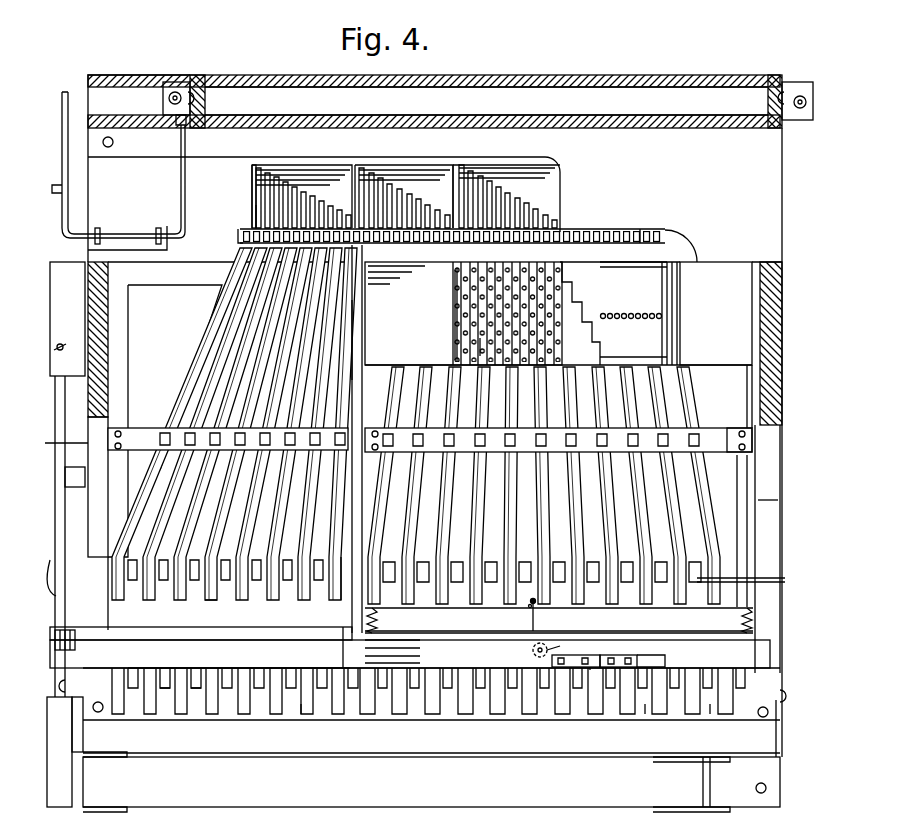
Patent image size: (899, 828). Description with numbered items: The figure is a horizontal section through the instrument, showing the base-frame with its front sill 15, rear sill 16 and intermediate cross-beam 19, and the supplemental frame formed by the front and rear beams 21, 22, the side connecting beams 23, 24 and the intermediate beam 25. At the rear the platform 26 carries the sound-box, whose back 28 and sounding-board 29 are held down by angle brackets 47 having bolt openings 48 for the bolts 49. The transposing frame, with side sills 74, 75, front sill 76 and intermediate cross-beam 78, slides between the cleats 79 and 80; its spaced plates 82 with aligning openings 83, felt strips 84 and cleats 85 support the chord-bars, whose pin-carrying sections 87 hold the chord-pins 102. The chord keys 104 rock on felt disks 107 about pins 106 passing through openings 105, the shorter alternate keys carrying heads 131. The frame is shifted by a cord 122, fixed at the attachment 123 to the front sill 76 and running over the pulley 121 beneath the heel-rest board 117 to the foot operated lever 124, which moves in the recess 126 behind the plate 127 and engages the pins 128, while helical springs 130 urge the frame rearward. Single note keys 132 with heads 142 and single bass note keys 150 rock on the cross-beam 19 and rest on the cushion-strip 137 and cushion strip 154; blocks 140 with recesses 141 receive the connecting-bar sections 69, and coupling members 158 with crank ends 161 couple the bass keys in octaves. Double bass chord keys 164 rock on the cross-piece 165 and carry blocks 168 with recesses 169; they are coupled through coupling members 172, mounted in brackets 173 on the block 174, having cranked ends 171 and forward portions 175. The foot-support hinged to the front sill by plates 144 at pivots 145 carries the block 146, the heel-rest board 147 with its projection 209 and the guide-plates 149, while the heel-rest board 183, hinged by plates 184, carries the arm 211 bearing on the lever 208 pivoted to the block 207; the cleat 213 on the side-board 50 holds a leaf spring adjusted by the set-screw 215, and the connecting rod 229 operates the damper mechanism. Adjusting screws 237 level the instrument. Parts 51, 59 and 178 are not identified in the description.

The back 28 is at (483, 75).
The sounding-board 29 is at (522, 95).
The angle bracket 47 is at (200, 78).
The bolt openings 48 is at (162, 82).
The bolts 49 is at (177, 92).
The platform 26 is at (139, 168).
The rear sill 16 is at (545, 165).
The connecting rod 229 is at (179, 128).
The adjusting screws 237 is at (110, 148).
The block 174 is at (127, 216).
The cleat 213 is at (69, 319).
The set-screw 215 is at (61, 343).
The side-board 50 is at (100, 348).
The lever rest plate 178 is at (228, 258).
The rear beam 22 is at (170, 283).
The front beam 21 is at (234, 437).
The chord keys 104 is at (590, 606).
The double bass chord keys 164 is at (250, 600).
The intermediate beam 25 is at (335, 595).
The side sill 74 is at (373, 380).
The cleat 80 is at (363, 338).
The plates 82 is at (482, 313).
The chord-pins 102 is at (488, 300).
The cleats 85 is at (454, 318).
The pin-carrying section 87 is at (478, 347).
The openings 83 is at (620, 312).
The cleat 79 is at (752, 405).
The felt strips 84 is at (655, 345).
The right frame post 51 is at (770, 353).
The opening 105 is at (701, 406).
The pin 106 is at (713, 437).
The side connecting beam 24 is at (770, 472).
The side sill 75 is at (770, 500).
The intermediate cross-beam 19 is at (128, 428).
The cross-piece 165 is at (172, 430).
The intermediate cross-beam 78 is at (558, 440).
The felt disk 107 is at (752, 440).
The upstanding head 131 is at (760, 583).
The side connecting beam 23 is at (55, 443).
The block 207 is at (72, 488).
The lever 208 is at (60, 585).
The arm 211 is at (58, 632).
The front sill 76 is at (452, 609).
The heel-rest board 183 is at (239, 654).
The plates 184 is at (344, 640).
The helical spring 130 is at (740, 622).
The cord 122 is at (538, 623).
The heel-rest board 117 is at (533, 650).
The pulley 121 is at (569, 644).
The cord attachment 123 is at (530, 606).
The recess 126 is at (606, 654).
The foot operated lever 124 is at (640, 662).
The plate 127 is at (660, 668).
The front sill 15 is at (254, 720).
The single note keys 132 is at (530, 712).
The cushion-strip 137 is at (316, 716).
The single bass note keys 150 is at (196, 690).
The pins 128 is at (592, 670).
The heads 142 is at (710, 702).
The plates 144 is at (84, 730).
The pivot 145 is at (88, 689).
The projection 209 is at (60, 732).
The guide-plates 149 is at (115, 806).
The heel-rest board 147 is at (431, 782).
The block 146 is at (756, 788).
The brackets 173 is at (250, 166).
The coupling members 172 is at (300, 176).
The cranked end 171 is at (251, 188).
The blocks 168 is at (256, 214).
The recess 169 is at (240, 230).
The forward portion 175 is at (398, 208).
The cushion strip 154 is at (458, 170).
The coupling members 158 is at (505, 192).
The crank end 161 is at (526, 203).
The type bar 59 is at (545, 215).
The connecting-bar section 69 is at (600, 229).
The block 140 is at (650, 228).
The recess 141 is at (663, 226).